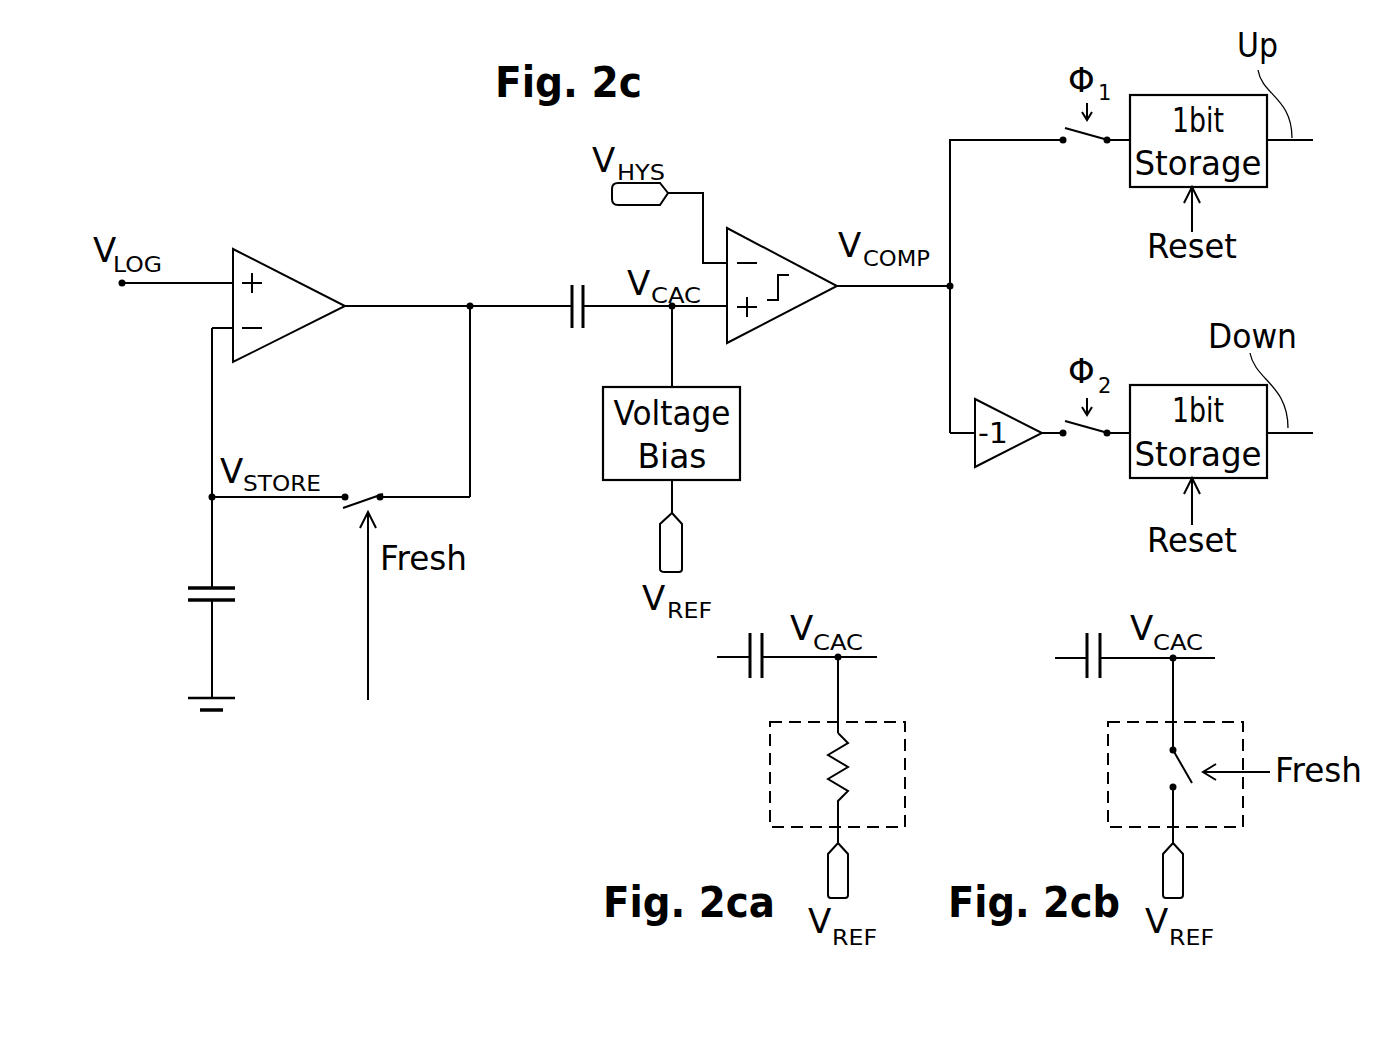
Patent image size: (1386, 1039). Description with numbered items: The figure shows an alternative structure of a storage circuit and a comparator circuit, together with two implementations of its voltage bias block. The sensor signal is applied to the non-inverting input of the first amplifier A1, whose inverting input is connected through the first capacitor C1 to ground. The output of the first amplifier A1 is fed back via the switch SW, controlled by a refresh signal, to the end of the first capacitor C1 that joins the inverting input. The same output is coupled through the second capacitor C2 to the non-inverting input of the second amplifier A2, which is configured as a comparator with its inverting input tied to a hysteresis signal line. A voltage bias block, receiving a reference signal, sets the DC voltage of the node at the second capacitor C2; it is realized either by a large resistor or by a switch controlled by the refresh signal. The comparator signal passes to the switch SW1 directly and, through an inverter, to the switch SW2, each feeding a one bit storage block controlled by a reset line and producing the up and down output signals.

In FIG. 2c, the first amplifier A1 is at (289, 305).
In FIG. 2c, the second amplifier A2 is at (800, 290).
In FIG. 2c, the first capacitor C1 is at (235, 591).
In FIG. 2c, the second capacitor C2 is at (576, 335).
In FIG. 2ca, the second capacitor C2 is at (756, 678).
In FIG. 2cb, the second capacitor C2 is at (1094, 678).
In FIG. 2c, the switch SW is at (364, 479).
In FIG. 2c, the switch SW1 is at (1073, 163).
In FIG. 2c, the switch SW2 is at (1073, 457).